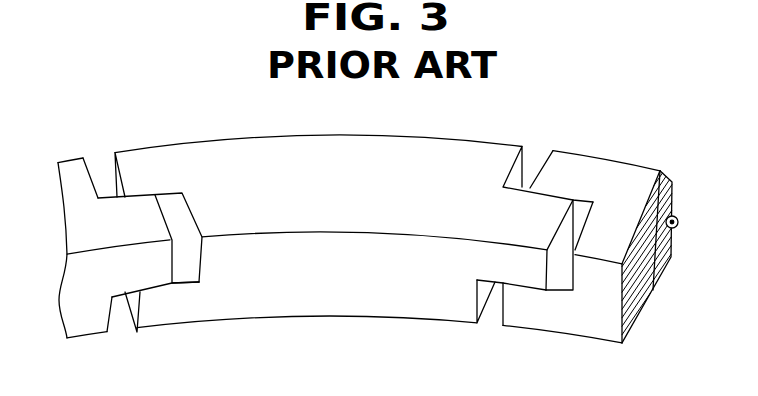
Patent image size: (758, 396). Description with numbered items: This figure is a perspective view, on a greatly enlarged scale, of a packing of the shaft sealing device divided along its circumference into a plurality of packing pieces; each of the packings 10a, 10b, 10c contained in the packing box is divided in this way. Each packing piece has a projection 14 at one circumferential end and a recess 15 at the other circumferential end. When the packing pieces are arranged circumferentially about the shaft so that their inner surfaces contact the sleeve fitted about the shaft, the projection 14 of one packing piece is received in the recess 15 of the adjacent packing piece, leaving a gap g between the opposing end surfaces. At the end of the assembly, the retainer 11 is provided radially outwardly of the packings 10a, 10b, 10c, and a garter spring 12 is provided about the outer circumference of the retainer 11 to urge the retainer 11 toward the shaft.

The packing 10a is at (268, 153).
The packing 10b is at (581, 247).
The packing 10c is at (128, 248).
The retainer 11 is at (667, 262).
The garter spring 12 is at (678, 219).
The projection 14 is at (527, 275).
The recess 15 is at (571, 273).
The gap g is at (107, 131).